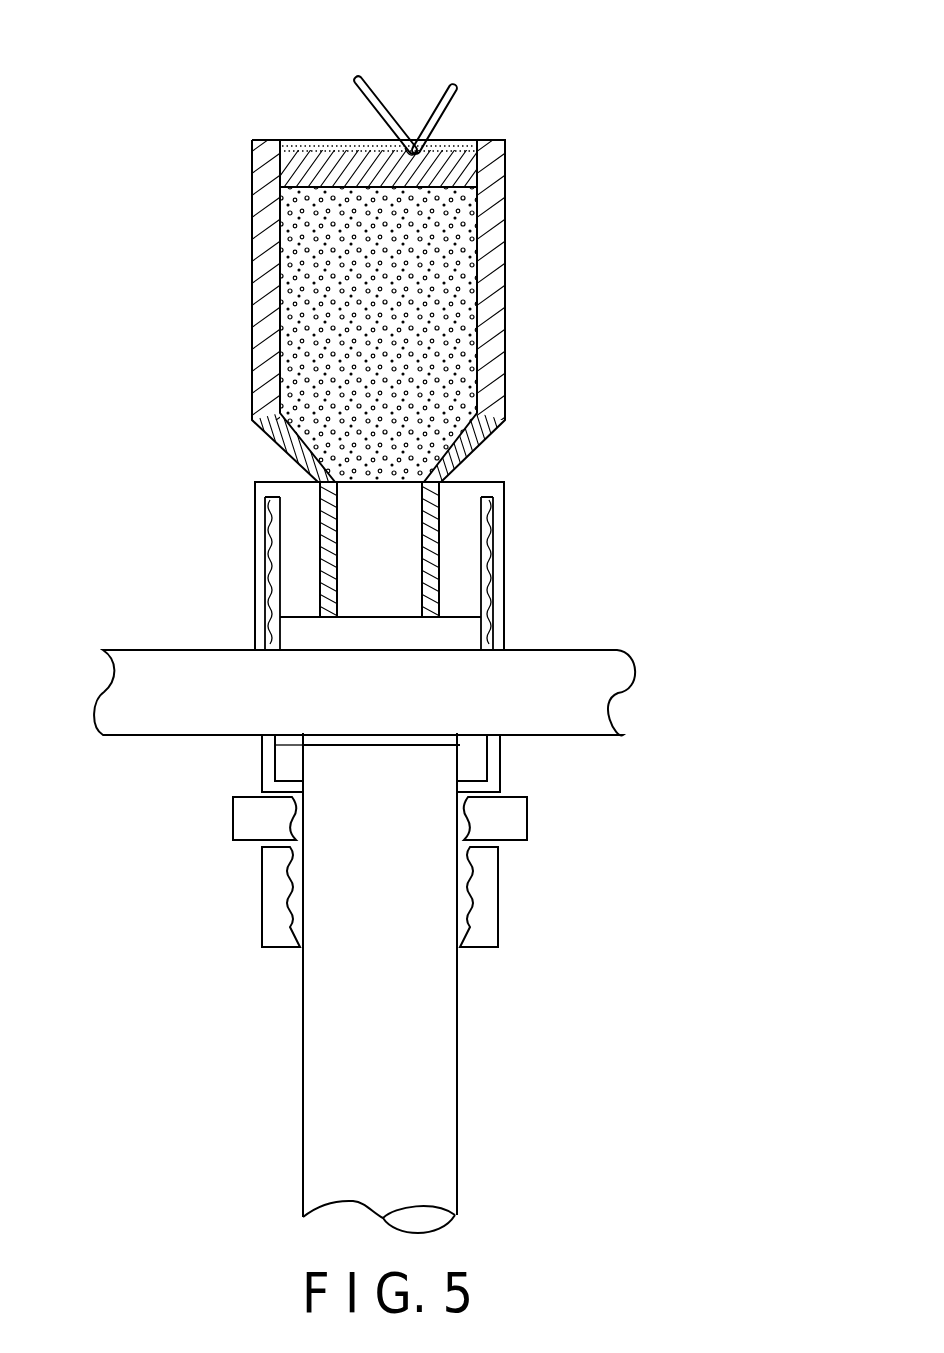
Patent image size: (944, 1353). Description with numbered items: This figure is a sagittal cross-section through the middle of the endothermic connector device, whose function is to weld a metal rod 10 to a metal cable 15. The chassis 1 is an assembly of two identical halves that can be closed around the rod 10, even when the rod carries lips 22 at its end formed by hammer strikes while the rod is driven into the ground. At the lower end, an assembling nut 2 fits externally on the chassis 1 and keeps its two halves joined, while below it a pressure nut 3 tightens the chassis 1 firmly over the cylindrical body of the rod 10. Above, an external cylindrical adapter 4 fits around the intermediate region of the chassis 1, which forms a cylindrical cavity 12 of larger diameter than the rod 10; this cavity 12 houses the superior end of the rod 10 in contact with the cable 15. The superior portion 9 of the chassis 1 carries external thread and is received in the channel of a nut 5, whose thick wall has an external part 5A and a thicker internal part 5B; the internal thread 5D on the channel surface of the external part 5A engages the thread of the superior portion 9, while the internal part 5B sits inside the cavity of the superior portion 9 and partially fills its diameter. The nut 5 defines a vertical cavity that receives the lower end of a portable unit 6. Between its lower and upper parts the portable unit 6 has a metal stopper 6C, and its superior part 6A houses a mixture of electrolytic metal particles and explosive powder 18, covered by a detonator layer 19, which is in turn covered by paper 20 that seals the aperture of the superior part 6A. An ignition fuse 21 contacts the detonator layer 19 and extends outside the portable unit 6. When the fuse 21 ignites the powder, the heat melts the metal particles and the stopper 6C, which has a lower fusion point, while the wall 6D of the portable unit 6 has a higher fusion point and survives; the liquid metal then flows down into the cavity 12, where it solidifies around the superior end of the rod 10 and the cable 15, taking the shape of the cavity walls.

The chassis 1 is at (503, 777).
The assembling nut 2 is at (530, 815).
The pressure nut 3 is at (500, 898).
The external cylindrical adapter 4 is at (508, 628).
The nut 5 is at (510, 543).
The external part 5A is at (505, 517).
The internal part 5B is at (458, 528).
The internal thread 5D is at (492, 575).
The portable unit 6 is at (510, 300).
The superior part 6A is at (352, 528).
The metal stopper 6C is at (332, 480).
The wall 6D is at (488, 372).
The superior portion 9 is at (270, 577).
The metal rod 10 is at (457, 1030).
The cylindrical cavity 12 is at (292, 763).
The metal cable 15 is at (590, 680).
The mixture of electrolytic particles of metal and explosive powder 18 is at (313, 298).
The detonator layer 19 is at (303, 167).
The paper 20 is at (460, 138).
The ignition fuse 21 is at (455, 87).
The lips 22 is at (290, 740).